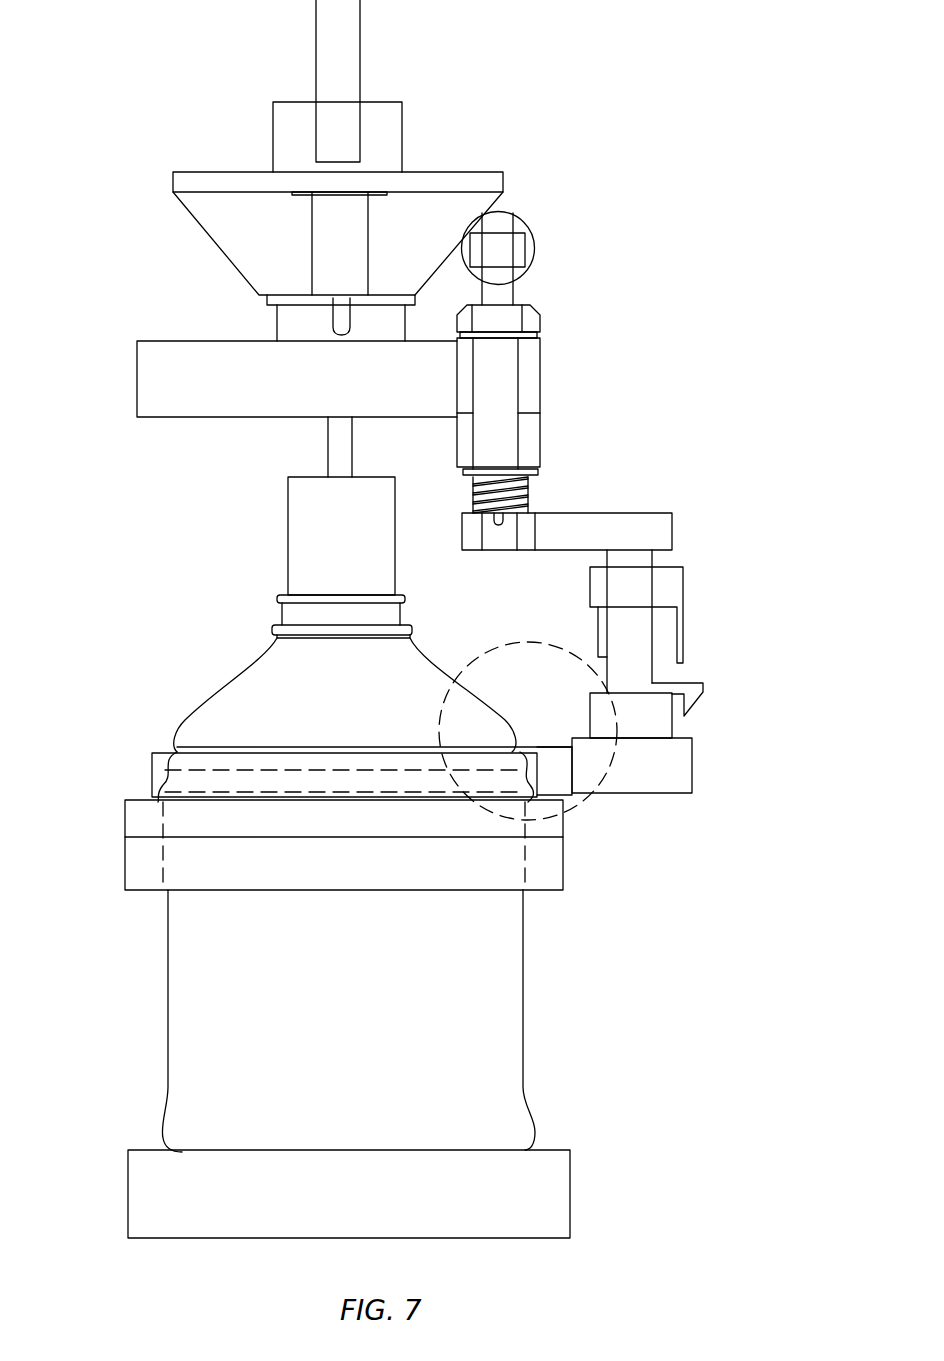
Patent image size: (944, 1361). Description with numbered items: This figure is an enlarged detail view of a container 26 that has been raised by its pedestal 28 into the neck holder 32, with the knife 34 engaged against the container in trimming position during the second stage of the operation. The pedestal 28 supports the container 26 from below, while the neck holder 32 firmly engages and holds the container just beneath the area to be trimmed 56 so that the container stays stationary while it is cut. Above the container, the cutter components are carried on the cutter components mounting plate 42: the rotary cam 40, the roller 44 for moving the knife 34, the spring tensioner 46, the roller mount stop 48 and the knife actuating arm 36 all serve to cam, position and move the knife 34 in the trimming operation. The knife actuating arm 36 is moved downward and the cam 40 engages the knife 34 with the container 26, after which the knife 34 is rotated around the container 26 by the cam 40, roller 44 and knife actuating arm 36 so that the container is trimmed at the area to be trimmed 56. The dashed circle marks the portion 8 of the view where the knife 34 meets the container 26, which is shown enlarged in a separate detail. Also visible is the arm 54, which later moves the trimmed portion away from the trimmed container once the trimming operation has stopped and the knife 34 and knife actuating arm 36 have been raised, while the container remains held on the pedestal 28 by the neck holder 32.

The portion 8 is at (582, 808).
The container 26 is at (364, 1017).
The pedestal 28 is at (368, 1212).
The neck holder 32 is at (130, 870).
The knife 34 is at (555, 740).
The knife actuating arm 36 is at (677, 766).
The rotary cam 40 is at (236, 228).
The cutter components mounting plate 42 is at (155, 380).
The roller 44 is at (503, 246).
The spring tensioner 46 is at (672, 583).
The roller mount stop 48 is at (703, 692).
The arm 54 is at (310, 527).
The area to be trimmed 56 is at (177, 752).